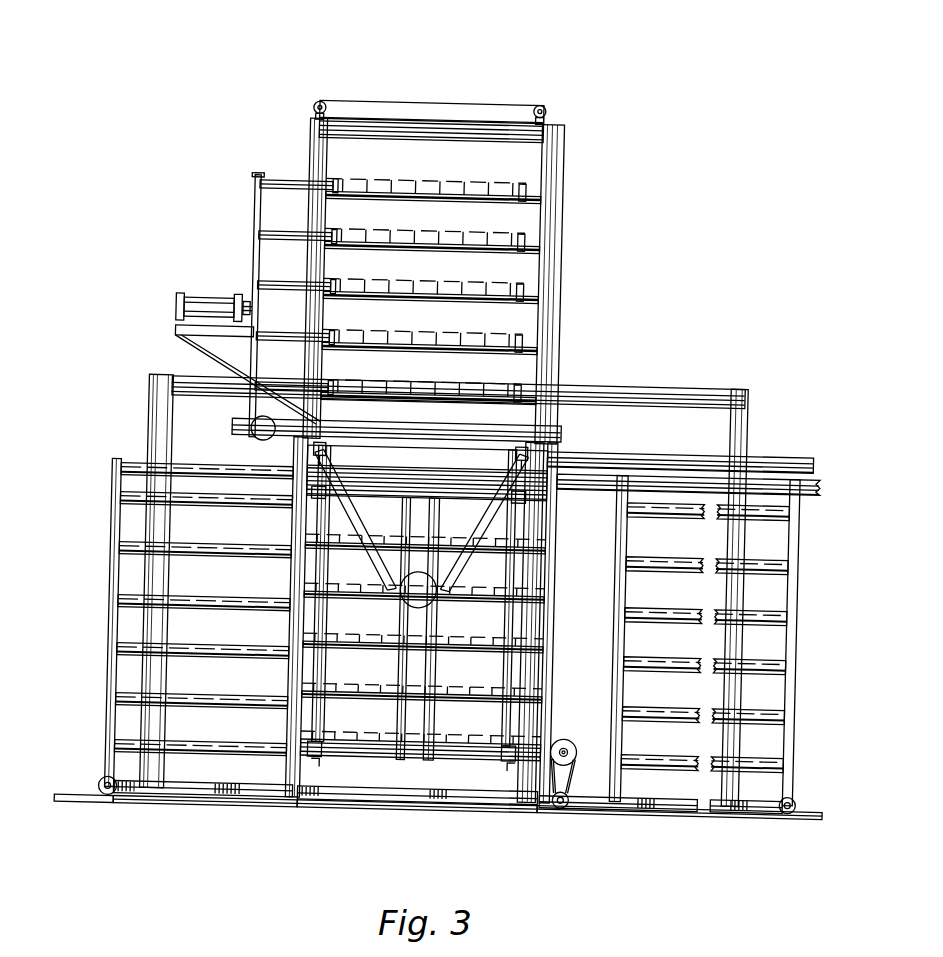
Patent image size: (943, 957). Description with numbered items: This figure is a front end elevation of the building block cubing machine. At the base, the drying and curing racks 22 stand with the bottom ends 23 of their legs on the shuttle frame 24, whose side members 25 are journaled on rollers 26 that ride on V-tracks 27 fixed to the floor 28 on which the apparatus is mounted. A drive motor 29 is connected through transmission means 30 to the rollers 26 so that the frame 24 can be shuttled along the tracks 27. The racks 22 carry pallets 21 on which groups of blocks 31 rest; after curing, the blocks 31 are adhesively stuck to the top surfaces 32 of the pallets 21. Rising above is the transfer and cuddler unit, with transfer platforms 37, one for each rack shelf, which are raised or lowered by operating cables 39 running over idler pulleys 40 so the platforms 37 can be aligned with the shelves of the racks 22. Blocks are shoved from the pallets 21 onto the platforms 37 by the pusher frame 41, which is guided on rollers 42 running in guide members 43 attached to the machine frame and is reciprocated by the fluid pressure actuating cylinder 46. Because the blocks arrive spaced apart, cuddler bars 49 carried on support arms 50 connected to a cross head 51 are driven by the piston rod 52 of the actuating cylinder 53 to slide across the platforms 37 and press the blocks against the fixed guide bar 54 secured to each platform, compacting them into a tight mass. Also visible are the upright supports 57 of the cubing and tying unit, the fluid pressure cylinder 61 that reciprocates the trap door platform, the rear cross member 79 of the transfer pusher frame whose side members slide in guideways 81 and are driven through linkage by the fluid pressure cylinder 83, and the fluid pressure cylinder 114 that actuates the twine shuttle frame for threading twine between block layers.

The pallets 21 is at (187, 598).
The drying and curing racks 22 is at (112, 584).
The bottom ends 23 is at (628, 812).
The shuttle frame 24 is at (443, 810).
The side members 25 is at (238, 793).
The rollers 26 is at (108, 788).
The V-tracks 27 is at (250, 812).
The floor 28 is at (72, 806).
The drive motor 29 is at (572, 737).
The transmission means 30 is at (575, 790).
The blocks 31 is at (500, 640).
The top surfaces 32 is at (385, 548).
The transfer platforms 37 is at (557, 303).
The operating cables 39 is at (452, 104).
The idler pulleys 40 is at (312, 104).
The pusher frame 41 is at (458, 548).
The rollers 42 is at (316, 525).
The guide members 43 is at (312, 500).
The fluid pressure actuating cylinder 46 is at (405, 609).
The cuddler bars 49 is at (331, 187).
The support arms 50 is at (282, 236).
The cross head 51 is at (250, 180).
The piston rod 52 is at (240, 310).
The actuating cylinder 53 is at (178, 300).
The fixed guide bar 54 is at (557, 241).
The upright supports 57 is at (746, 398).
The fluid pressure cylinder 61 is at (768, 455).
The rear cross member 79 is at (452, 470).
The guideways 81 is at (325, 456).
The fluid pressure cylinder 83 is at (258, 444).
The fluid pressure cylinder 114 is at (812, 478).